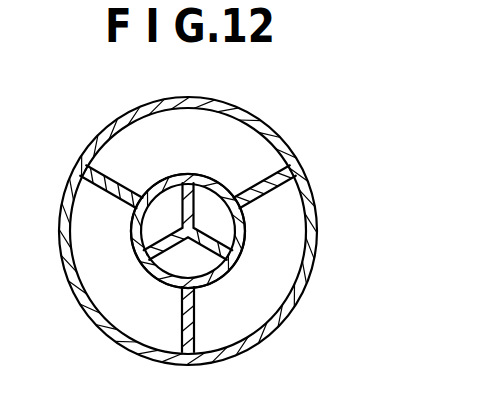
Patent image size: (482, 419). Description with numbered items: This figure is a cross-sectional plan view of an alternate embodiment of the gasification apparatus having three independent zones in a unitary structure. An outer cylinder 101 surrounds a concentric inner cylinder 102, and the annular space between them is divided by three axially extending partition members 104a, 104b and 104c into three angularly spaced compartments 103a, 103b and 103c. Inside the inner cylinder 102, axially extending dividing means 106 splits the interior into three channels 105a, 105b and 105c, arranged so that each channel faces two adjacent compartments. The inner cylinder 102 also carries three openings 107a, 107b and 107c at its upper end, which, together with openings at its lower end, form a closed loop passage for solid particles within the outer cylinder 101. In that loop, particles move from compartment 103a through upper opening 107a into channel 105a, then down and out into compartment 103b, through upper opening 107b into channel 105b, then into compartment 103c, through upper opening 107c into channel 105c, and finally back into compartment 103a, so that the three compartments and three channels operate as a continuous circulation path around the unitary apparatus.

The outer cylinder 101 is at (317, 218).
The inner cylinder 102 is at (241, 249).
The compartment 103a is at (103, 288).
The compartment 103b is at (174, 112).
The compartment 103c is at (273, 297).
The partition member 104a is at (166, 350).
The partition member 104b is at (110, 191).
The partition member 104c is at (275, 163).
The channel 105a is at (170, 200).
The channel 105b is at (217, 226).
The channel 105c is at (177, 268).
The dividing means 106 is at (200, 190).
The upper opening 107a is at (132, 240).
The upper opening 107b is at (226, 193).
The upper opening 107c is at (206, 285).